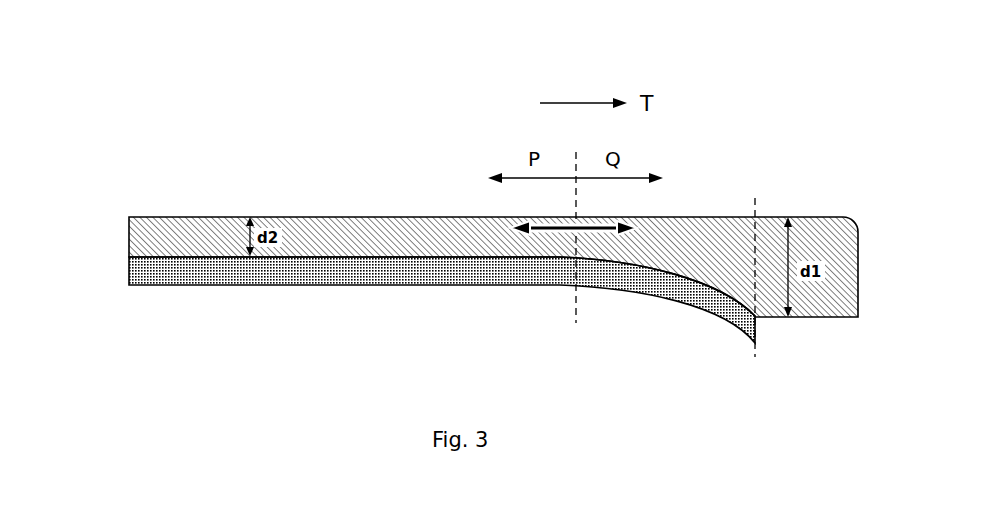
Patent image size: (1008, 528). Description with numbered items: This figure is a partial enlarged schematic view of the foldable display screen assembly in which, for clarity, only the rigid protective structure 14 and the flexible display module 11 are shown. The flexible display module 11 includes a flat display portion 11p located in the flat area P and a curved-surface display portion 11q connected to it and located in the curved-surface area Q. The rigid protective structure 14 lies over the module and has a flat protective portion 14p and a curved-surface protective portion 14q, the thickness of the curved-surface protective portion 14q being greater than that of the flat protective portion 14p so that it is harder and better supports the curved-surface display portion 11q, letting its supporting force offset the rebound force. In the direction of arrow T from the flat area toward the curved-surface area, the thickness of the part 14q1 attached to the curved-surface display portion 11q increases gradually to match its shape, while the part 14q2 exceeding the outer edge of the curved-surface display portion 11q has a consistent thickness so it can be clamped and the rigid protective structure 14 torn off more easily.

The rigid protective structure 14 is at (465, 239).
The flat protective portion 14p is at (493, 252).
The curved-surface protective portion 14q is at (513, 239).
The part attached to the curved-surface display portion 14q1 is at (702, 238).
The part exceeding the outer edge of the curved-surface display portion 14q2 is at (833, 238).
The flexible display module 11 is at (393, 308).
The flat display portion 11p is at (503, 273).
The curved-surface display portion 11q is at (670, 285).